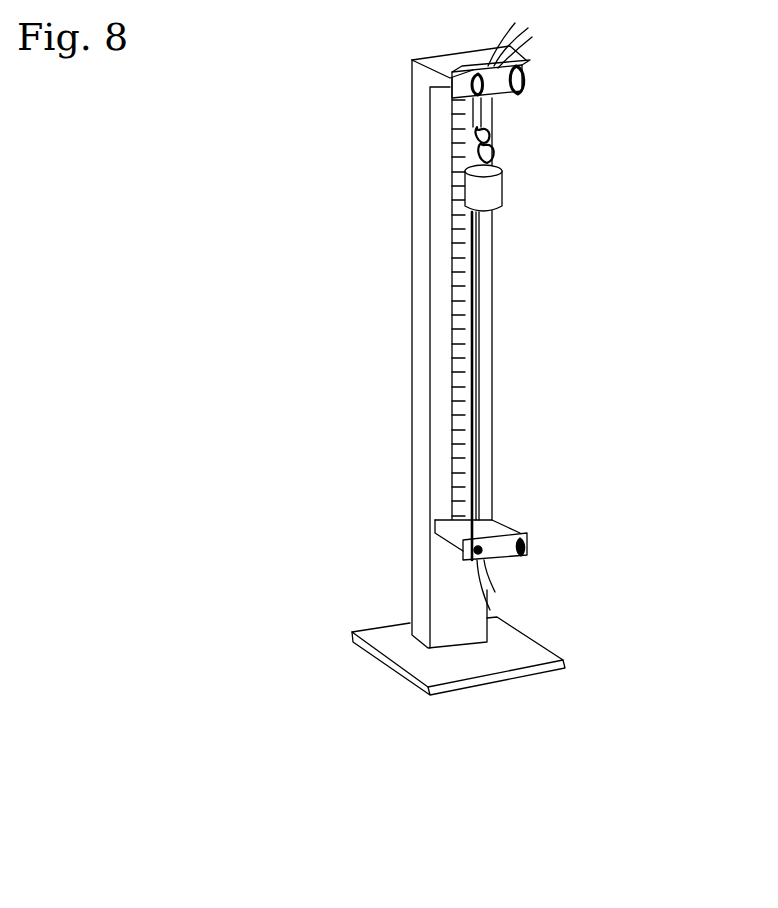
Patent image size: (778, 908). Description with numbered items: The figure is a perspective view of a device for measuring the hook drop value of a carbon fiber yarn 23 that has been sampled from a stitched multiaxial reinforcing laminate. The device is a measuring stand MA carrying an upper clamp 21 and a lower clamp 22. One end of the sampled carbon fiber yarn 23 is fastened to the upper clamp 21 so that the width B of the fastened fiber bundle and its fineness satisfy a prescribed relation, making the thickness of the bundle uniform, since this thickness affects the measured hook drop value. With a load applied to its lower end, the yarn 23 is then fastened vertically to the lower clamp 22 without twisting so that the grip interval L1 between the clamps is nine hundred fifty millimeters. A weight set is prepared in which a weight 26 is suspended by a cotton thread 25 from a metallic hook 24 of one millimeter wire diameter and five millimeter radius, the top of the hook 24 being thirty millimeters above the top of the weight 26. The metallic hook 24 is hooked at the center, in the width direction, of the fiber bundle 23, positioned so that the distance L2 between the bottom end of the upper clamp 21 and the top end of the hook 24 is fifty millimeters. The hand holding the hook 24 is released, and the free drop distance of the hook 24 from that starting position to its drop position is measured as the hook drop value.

The upper clamp 21 is at (522, 62).
The lower clamp 22 is at (522, 531).
The carbon fiber yarn 23 is at (480, 423).
The metallic hook 24 is at (493, 135).
The cotton thread 25 is at (500, 166).
The weight 26 is at (503, 207).
The width of fastened fiber bundle B is at (441, 332).
The grip interval L1 is at (470, 102).
The distance between bottom end of upper clamp and top end of metallic hook L2 is at (470, 138).
The measuring stand MA is at (393, 663).